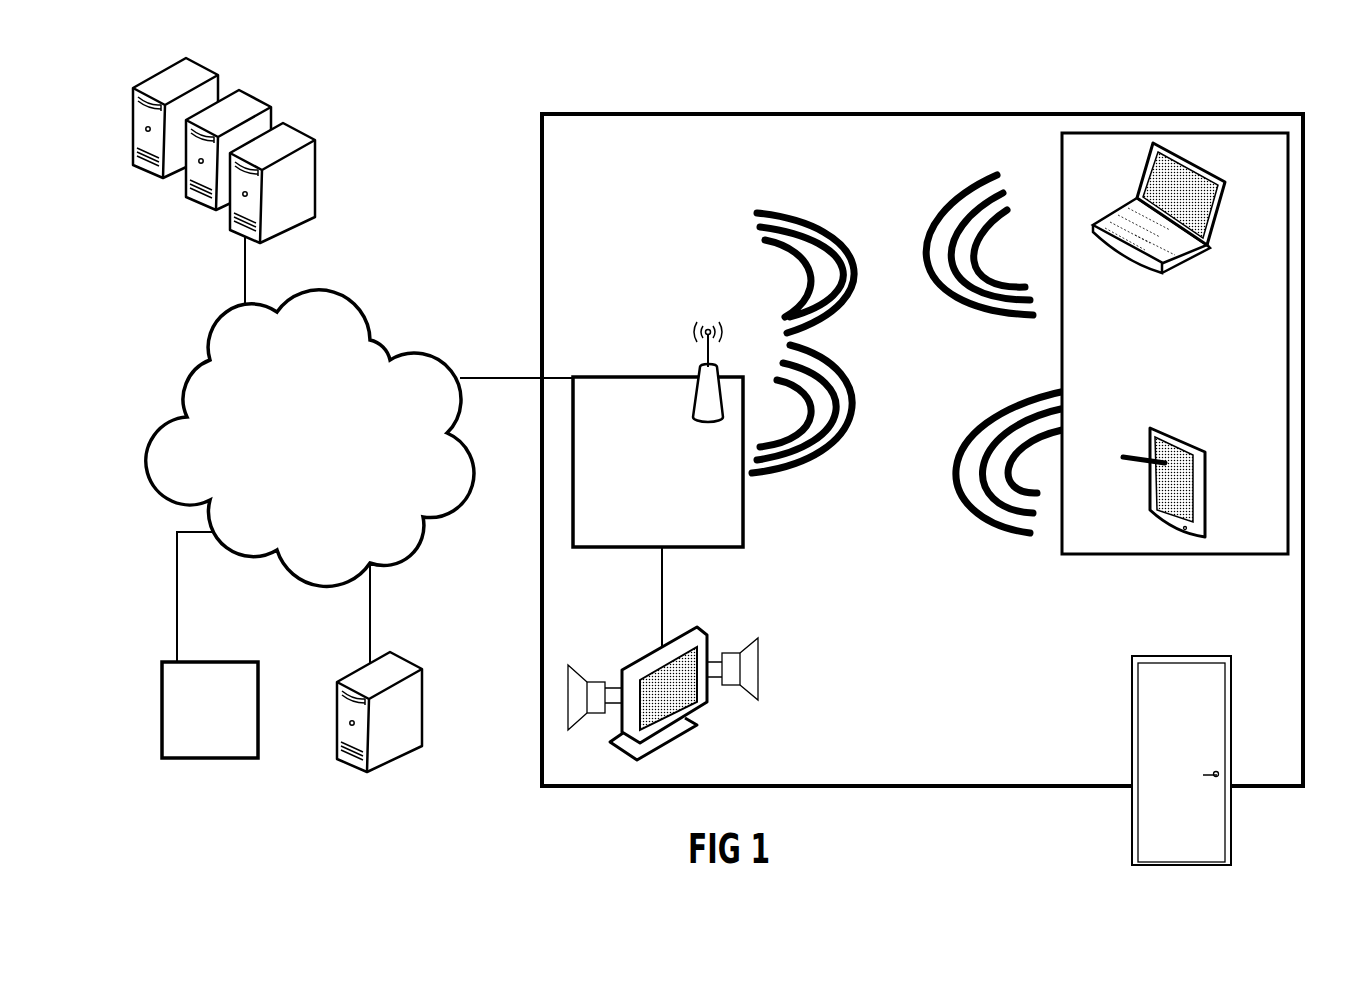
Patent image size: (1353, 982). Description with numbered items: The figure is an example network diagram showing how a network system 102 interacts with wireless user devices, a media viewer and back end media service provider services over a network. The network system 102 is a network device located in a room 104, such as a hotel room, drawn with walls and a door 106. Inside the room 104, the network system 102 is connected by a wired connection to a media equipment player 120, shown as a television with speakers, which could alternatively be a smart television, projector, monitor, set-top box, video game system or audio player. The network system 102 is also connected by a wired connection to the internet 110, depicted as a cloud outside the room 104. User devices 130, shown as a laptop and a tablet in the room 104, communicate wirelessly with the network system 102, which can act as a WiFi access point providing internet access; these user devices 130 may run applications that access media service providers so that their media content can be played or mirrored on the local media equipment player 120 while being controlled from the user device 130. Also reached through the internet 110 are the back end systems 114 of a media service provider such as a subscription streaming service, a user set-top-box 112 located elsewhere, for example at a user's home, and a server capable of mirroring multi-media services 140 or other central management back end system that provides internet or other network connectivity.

The network system 102 is at (610, 375).
The room 104 is at (973, 783).
The door 106 is at (1135, 812).
The internet 110 is at (358, 322).
The user set-top-box 112 is at (232, 760).
The back end systems 114 is at (290, 230).
The media equipment player 120 is at (687, 730).
The user devices 130 is at (1172, 557).
The server capable of mirroring multi-media services 140 is at (407, 752).